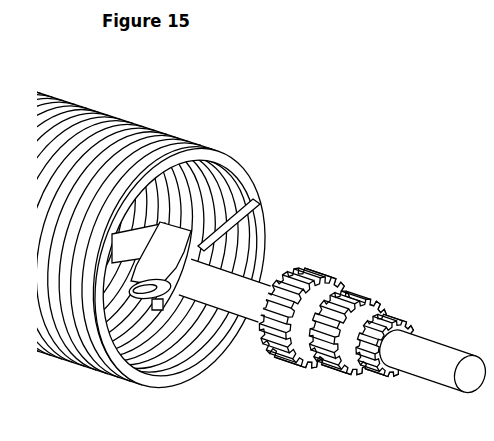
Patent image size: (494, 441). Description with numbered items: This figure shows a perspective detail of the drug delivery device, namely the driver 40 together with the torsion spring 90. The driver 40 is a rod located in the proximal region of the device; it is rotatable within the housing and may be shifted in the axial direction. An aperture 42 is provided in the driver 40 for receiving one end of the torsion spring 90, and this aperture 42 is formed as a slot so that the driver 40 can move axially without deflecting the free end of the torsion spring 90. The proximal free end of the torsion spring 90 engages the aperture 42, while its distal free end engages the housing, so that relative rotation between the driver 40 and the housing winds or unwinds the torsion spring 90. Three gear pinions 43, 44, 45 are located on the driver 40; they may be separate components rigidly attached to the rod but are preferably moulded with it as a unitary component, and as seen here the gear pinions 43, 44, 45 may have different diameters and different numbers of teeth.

The torsion spring 90 is at (213, 152).
The aperture 42 is at (200, 248).
The driver 40 is at (493, 204).
The gear pinion 43 is at (322, 278).
The gear pinion 44 is at (366, 300).
The gear pinion 45 is at (397, 316).